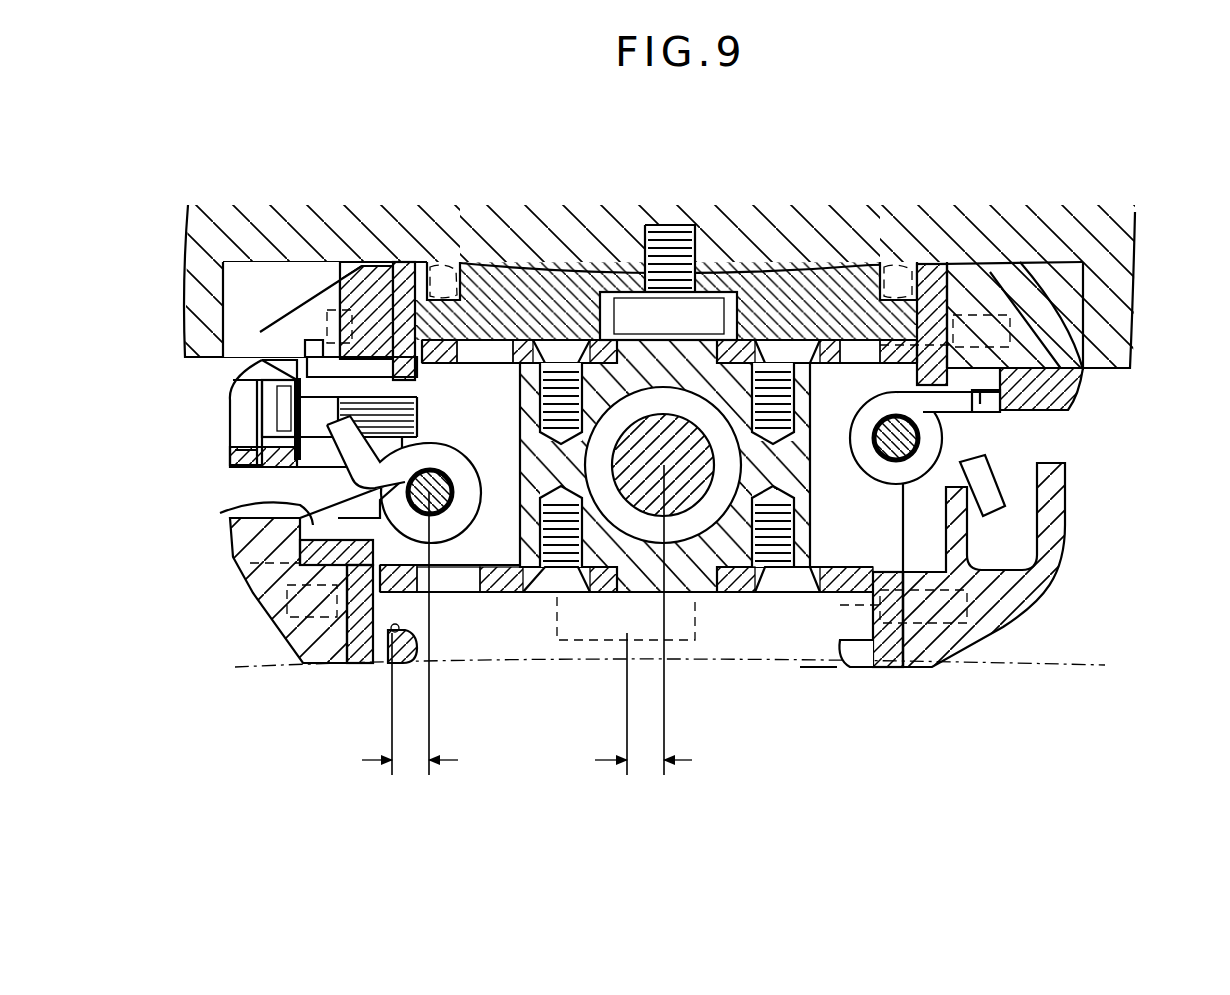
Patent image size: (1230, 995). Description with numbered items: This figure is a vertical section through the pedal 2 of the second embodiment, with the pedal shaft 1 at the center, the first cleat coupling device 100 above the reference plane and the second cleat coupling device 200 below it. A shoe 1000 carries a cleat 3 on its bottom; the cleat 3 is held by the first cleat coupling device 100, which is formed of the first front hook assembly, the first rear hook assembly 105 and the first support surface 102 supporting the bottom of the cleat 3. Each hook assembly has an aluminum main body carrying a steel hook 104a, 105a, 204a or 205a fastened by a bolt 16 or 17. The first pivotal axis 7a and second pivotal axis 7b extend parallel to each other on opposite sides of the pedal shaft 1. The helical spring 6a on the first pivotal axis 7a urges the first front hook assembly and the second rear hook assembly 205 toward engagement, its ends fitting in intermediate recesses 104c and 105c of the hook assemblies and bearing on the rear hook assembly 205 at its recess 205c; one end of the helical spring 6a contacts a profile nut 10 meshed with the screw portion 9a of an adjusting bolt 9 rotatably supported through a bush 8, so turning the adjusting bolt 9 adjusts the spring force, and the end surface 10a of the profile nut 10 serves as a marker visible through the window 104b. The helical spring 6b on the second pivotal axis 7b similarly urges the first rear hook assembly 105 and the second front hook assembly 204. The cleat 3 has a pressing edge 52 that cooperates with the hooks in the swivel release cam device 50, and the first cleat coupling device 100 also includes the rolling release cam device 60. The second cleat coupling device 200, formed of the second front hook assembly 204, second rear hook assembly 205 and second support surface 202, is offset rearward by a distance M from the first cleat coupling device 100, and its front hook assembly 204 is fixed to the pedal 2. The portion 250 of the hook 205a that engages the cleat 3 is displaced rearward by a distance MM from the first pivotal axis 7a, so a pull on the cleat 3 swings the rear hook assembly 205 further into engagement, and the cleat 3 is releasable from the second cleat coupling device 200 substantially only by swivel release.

The pedal shaft 1 is at (687, 503).
The pedal 2 is at (737, 604).
The cleat 3 is at (787, 290).
The helical spring 6a is at (465, 525).
The helical spring 6b is at (893, 486).
The first pivotal axis 7a is at (446, 480).
The second pivotal axis 7b is at (878, 470).
The bush 8 is at (285, 380).
The adjusting bolt 9 is at (250, 415).
The screw portion 9a is at (398, 392).
The profile nut 10 is at (392, 372).
The end surface 10a is at (325, 340).
The bolt 16 is at (353, 293).
The bolt 17 is at (1000, 332).
The swivel release cam device 50 is at (709, 214).
The rolling release cam device 60 is at (470, 262).
The pressing edge 52 is at (437, 262).
The first cleat coupling device 100 is at (716, 208).
The first support surface 102 is at (520, 332).
The hook 104a is at (408, 275).
The window 104b is at (240, 365).
The intermediate recess 104c is at (335, 462).
The first rear hook assembly 105 is at (1058, 393).
The hook 105a is at (935, 280).
The intermediate recess 105c is at (990, 415).
The second cleat coupling device 200 is at (620, 617).
The second support surface 202 is at (508, 597).
The second front hook assembly 204 is at (1002, 617).
The hook 204a is at (887, 667).
The second rear hook assembly 205 is at (263, 603).
The hook 205a is at (353, 663).
The block portion 205c is at (240, 513).
The portion for engaging the cleat 250 is at (385, 663).
The shoe 1000 is at (1113, 322).
The distance M is at (626, 633).
The distance MM is at (410, 646).